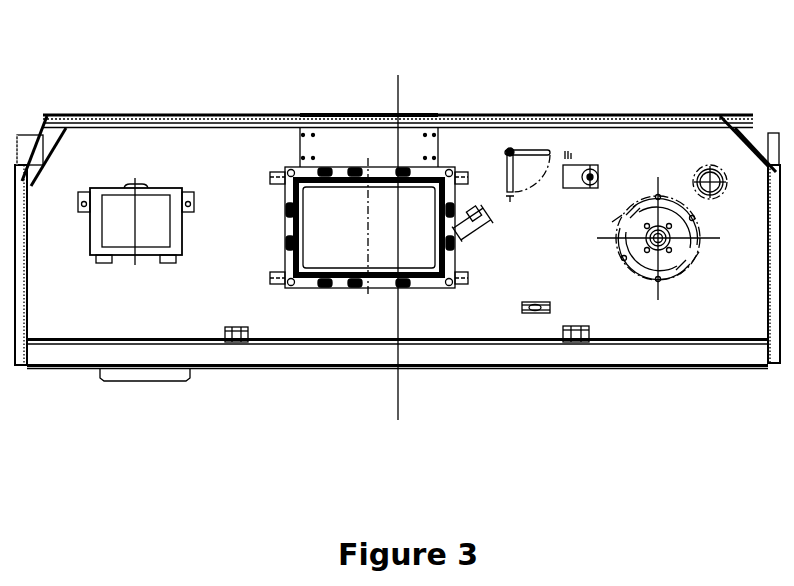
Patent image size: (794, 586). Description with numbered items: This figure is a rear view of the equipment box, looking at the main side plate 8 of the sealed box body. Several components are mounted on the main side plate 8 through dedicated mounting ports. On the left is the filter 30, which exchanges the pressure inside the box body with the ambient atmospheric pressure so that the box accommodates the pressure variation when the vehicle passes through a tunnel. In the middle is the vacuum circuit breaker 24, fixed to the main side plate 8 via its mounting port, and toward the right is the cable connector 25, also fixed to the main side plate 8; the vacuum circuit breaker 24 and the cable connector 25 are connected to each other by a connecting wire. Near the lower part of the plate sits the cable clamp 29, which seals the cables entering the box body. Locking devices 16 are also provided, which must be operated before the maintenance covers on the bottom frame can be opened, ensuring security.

The main side plate 8 is at (198, 313).
The locking device 16 is at (512, 150).
The vacuum circuit breaker 24 is at (415, 200).
The cable connector 25 is at (668, 268).
The cable clamp 29 is at (535, 313).
The filter 30 is at (157, 200).